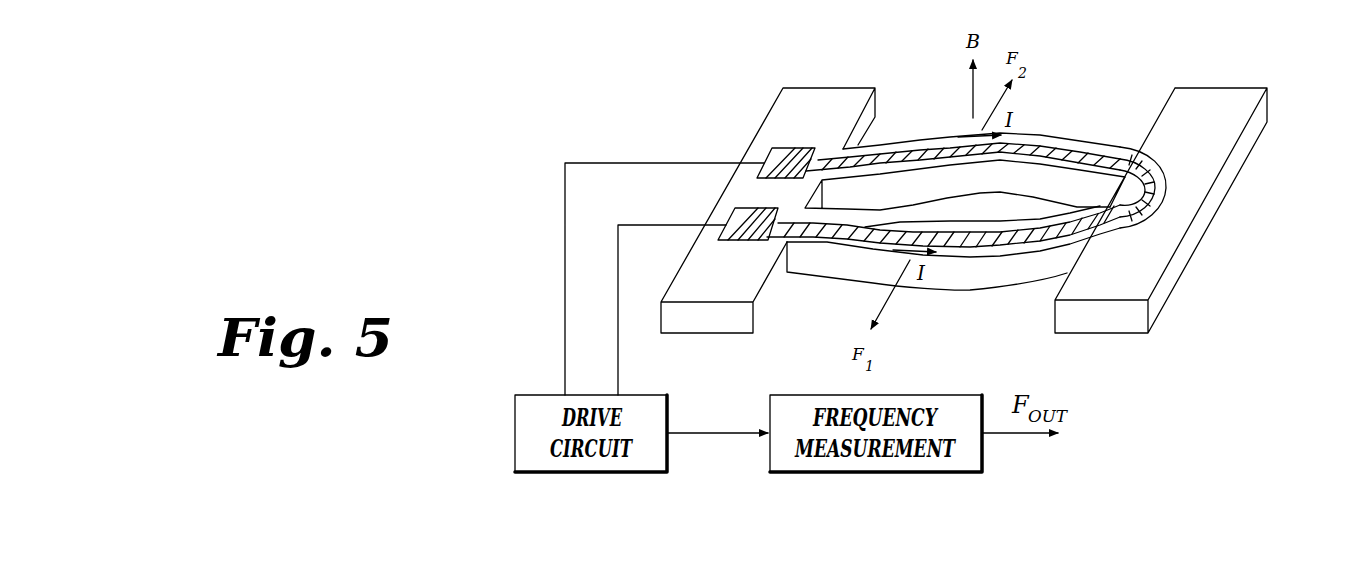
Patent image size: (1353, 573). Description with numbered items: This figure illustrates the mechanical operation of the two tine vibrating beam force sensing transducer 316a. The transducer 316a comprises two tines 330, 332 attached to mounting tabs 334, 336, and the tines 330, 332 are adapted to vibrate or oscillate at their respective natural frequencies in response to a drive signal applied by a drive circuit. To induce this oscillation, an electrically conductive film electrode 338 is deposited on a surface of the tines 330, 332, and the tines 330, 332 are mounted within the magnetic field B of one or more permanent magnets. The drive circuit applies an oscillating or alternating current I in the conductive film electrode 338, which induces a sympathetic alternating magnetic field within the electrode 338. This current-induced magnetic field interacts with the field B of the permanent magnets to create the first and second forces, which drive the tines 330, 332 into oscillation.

The two tine vibrating beam force sensing transducer 316a is at (608, 144).
The tine 330 is at (840, 268).
The tine 332 is at (920, 146).
The mounting tab 334 is at (758, 127).
The mounting tab 336 is at (1250, 152).
The electrically conductive film electrode 338 is at (1166, 193).